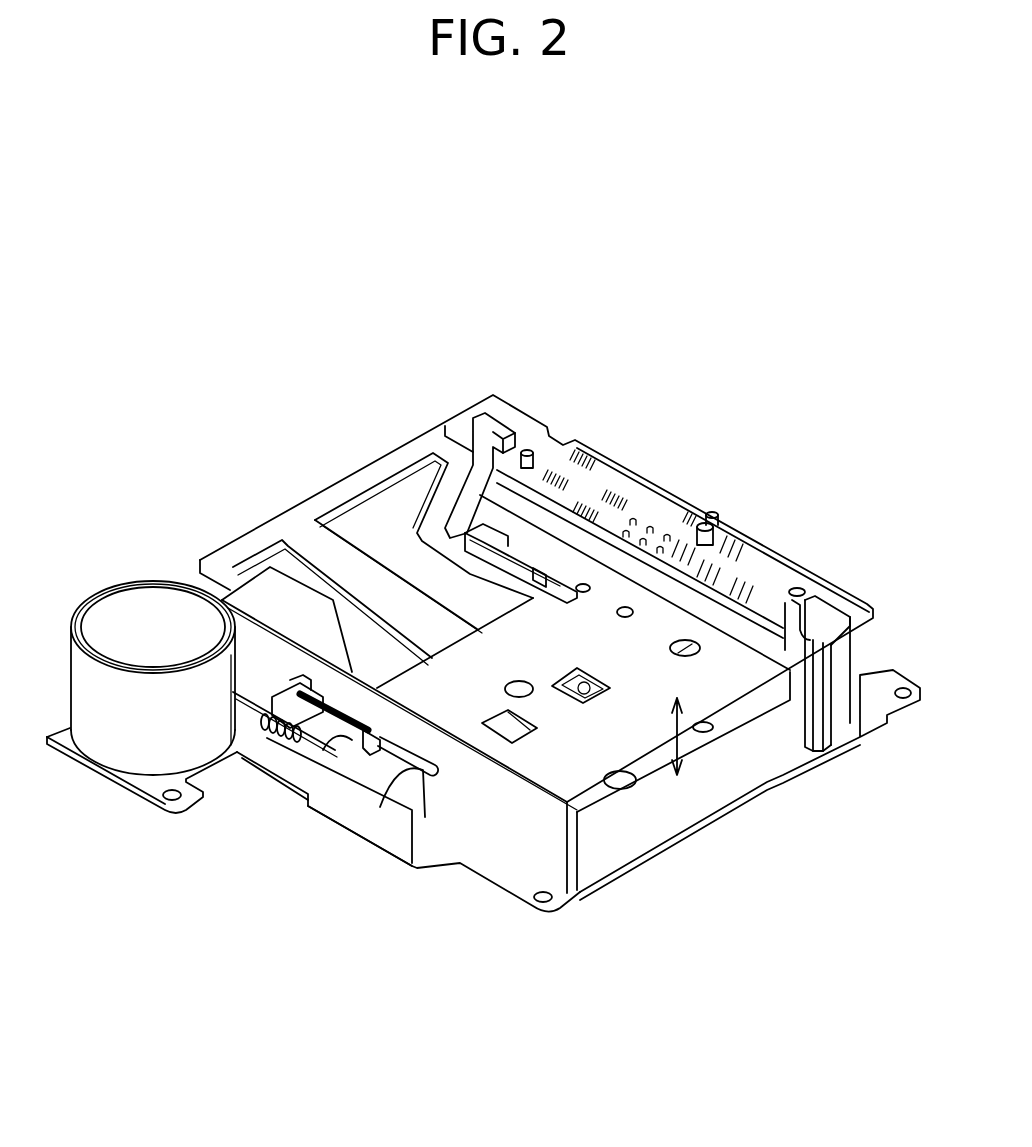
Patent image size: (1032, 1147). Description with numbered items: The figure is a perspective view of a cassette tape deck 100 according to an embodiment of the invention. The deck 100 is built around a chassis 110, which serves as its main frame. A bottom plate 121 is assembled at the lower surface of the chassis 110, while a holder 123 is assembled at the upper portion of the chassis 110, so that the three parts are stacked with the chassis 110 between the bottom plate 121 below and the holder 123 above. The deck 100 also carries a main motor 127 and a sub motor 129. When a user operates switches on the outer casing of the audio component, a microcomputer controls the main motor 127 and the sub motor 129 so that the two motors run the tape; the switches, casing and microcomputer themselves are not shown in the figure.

The deck 100 is at (510, 240).
The chassis 110 is at (513, 873).
The bottom plate 121 is at (877, 773).
The holder 123 is at (628, 742).
The main motor 127 is at (148, 622).
The sub motor 129 is at (353, 753).